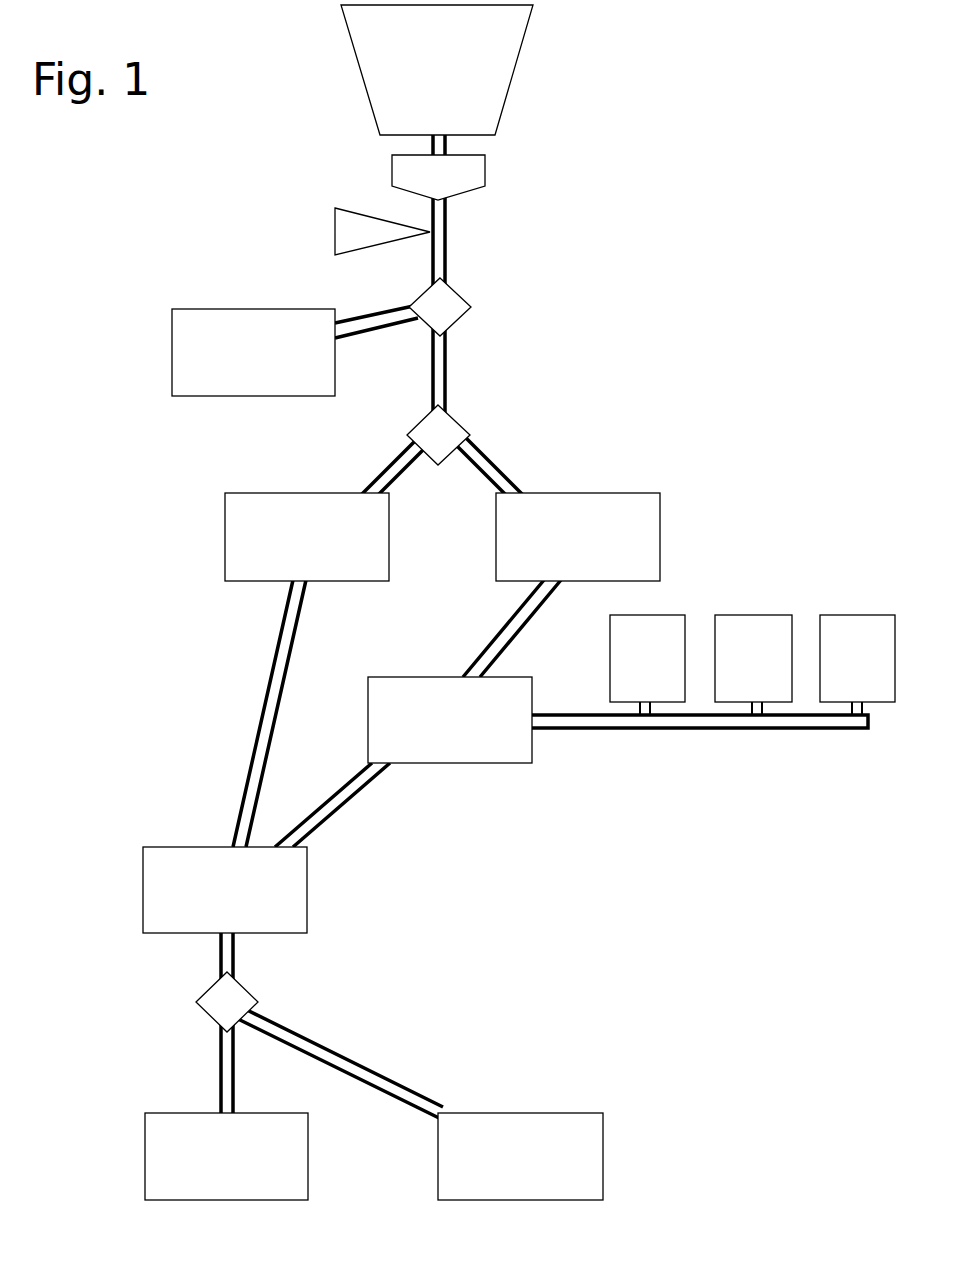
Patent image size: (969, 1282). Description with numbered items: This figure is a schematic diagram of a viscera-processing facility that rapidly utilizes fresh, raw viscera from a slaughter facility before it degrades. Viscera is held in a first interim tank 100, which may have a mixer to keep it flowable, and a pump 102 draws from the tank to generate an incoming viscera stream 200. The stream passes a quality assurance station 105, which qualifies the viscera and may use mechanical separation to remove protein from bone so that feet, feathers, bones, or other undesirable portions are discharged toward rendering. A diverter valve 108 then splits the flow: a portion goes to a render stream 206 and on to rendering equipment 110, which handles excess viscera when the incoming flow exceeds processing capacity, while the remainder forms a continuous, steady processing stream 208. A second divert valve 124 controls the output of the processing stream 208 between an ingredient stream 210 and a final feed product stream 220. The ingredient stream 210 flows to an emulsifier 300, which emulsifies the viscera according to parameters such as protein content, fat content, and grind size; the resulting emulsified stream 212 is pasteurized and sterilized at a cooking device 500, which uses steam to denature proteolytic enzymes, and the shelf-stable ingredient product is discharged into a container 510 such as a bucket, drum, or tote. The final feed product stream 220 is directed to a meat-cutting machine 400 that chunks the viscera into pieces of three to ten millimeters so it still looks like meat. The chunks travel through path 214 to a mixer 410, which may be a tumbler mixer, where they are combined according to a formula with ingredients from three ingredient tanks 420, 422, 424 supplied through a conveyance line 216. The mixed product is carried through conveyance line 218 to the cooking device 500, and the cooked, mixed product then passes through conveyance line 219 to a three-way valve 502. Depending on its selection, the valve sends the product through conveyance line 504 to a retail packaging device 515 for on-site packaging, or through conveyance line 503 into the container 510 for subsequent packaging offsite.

The first interim tank 100 is at (437, 70).
The pump 102 is at (438, 177).
The quality assurance station 105 is at (382, 231).
The diverter valve 108 is at (455, 326).
The rendering equipment 110 is at (253, 352).
The second divert valve 124 is at (462, 425).
The incoming viscera stream 200 is at (448, 253).
The render stream 206 is at (373, 313).
The processing stream 208 is at (448, 378).
The ingredient stream 210 is at (394, 457).
The emulsified stream 212 is at (277, 648).
The path 214 is at (503, 625).
The conveyance line 216 is at (597, 730).
The conveyance line 218 is at (330, 820).
The conveyance line 219 is at (207, 985).
The final feed product stream 220 is at (490, 461).
The emulsifier 300 is at (307, 537).
The meat-cutting machine 400 is at (578, 537).
The mixer 410 is at (450, 720).
The ingredient tank 420 is at (647, 658).
The ingredient tank 422 is at (753, 658).
The ingredient tank 424 is at (857, 658).
The cooking device 500 is at (225, 890).
The three-way valve 502 is at (253, 993).
The conveyance line 503 is at (218, 1057).
The conveyance line 504 is at (350, 1068).
The container 510 is at (226, 1156).
The retail packaging device 515 is at (520, 1156).